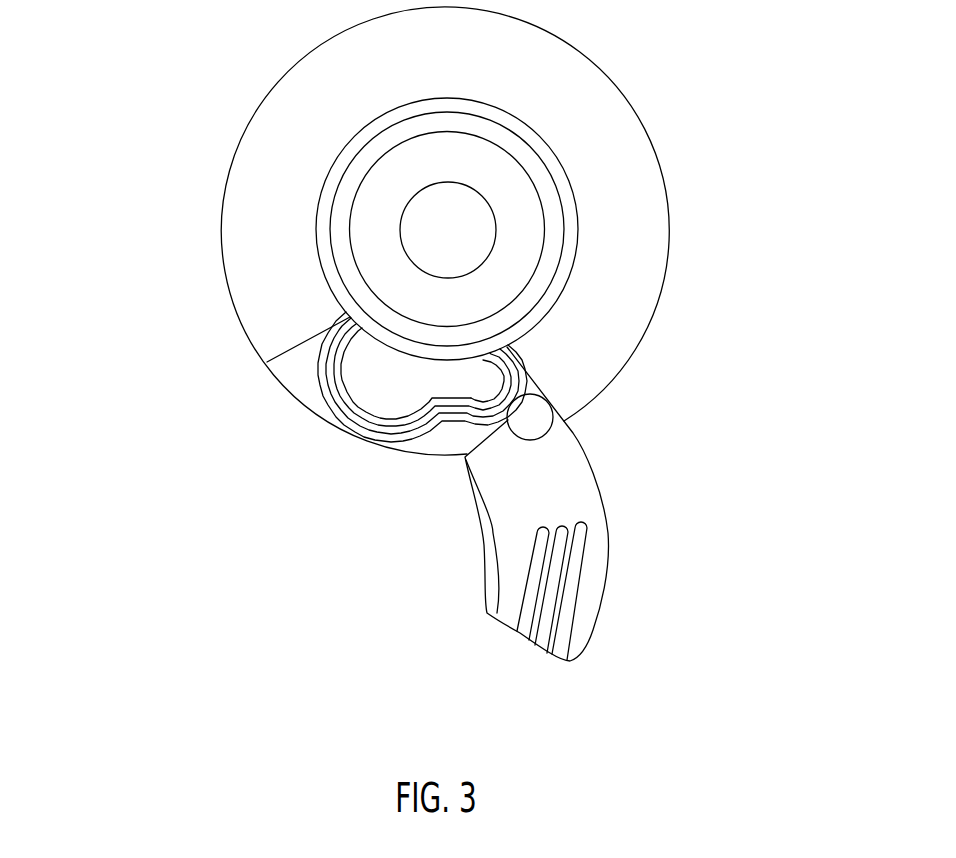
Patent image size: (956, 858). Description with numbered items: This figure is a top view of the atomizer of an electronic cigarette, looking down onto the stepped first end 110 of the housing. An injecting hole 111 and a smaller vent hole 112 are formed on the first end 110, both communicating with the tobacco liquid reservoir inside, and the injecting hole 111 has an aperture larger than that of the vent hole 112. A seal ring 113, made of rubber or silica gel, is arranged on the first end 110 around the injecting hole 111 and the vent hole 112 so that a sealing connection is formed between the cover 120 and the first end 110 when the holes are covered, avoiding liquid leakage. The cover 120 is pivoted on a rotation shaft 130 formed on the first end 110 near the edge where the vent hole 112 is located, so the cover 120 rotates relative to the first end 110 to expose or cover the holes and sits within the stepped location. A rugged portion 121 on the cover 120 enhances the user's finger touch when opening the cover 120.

The first end 110 is at (262, 207).
The injecting hole 111 is at (372, 385).
The vent hole 112 is at (483, 380).
The seal ring 113 is at (382, 422).
The cover 120 is at (582, 500).
The rugged portion 121 is at (578, 621).
The rotation shaft 130 is at (530, 415).